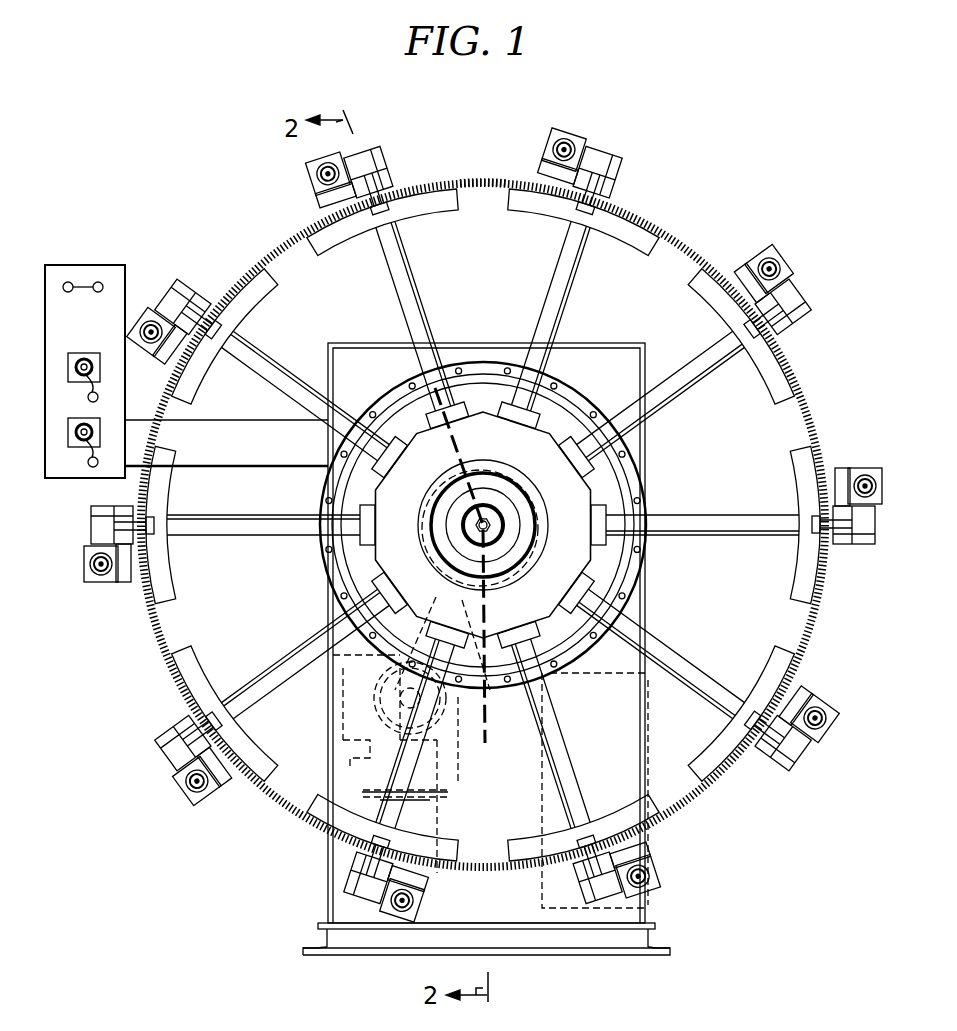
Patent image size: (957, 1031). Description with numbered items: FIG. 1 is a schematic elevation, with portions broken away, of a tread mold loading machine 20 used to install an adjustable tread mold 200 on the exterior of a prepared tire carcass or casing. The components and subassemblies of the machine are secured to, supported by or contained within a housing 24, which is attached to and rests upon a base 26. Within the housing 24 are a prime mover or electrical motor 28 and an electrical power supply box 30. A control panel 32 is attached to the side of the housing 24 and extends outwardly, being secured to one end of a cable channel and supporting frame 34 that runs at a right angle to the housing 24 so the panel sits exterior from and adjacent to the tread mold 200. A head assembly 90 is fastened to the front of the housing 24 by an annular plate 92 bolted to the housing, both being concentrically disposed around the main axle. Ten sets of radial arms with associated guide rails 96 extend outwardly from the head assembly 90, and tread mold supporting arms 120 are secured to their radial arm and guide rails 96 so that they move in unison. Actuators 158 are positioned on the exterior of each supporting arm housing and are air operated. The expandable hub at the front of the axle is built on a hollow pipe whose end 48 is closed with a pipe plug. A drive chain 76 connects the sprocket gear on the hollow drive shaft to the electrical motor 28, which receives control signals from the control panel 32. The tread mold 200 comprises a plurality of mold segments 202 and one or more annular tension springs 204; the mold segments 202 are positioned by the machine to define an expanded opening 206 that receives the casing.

The tread mold loading machine 20 is at (404, 662).
The housing 24 is at (324, 878).
The base 26 is at (320, 942).
The electrical motor 28 is at (452, 790).
The electrical power supply box 30 is at (646, 718).
The control panel 32 is at (78, 262).
The cable channel and supporting frame 34 is at (230, 420).
The end of pipe 48 is at (478, 522).
The drive chain 76 is at (432, 597).
The head assembly 90 is at (442, 467).
The annular plate 92 is at (372, 398).
The guide rails 96 is at (420, 284).
The tread mold supporting arms 120 is at (380, 138).
The actuators 158 is at (562, 124).
The tread mold 200 is at (510, 501).
The mold segments 202 is at (631, 244).
The annular tension springs 204 is at (795, 398).
The expanded opening 206 is at (468, 208).